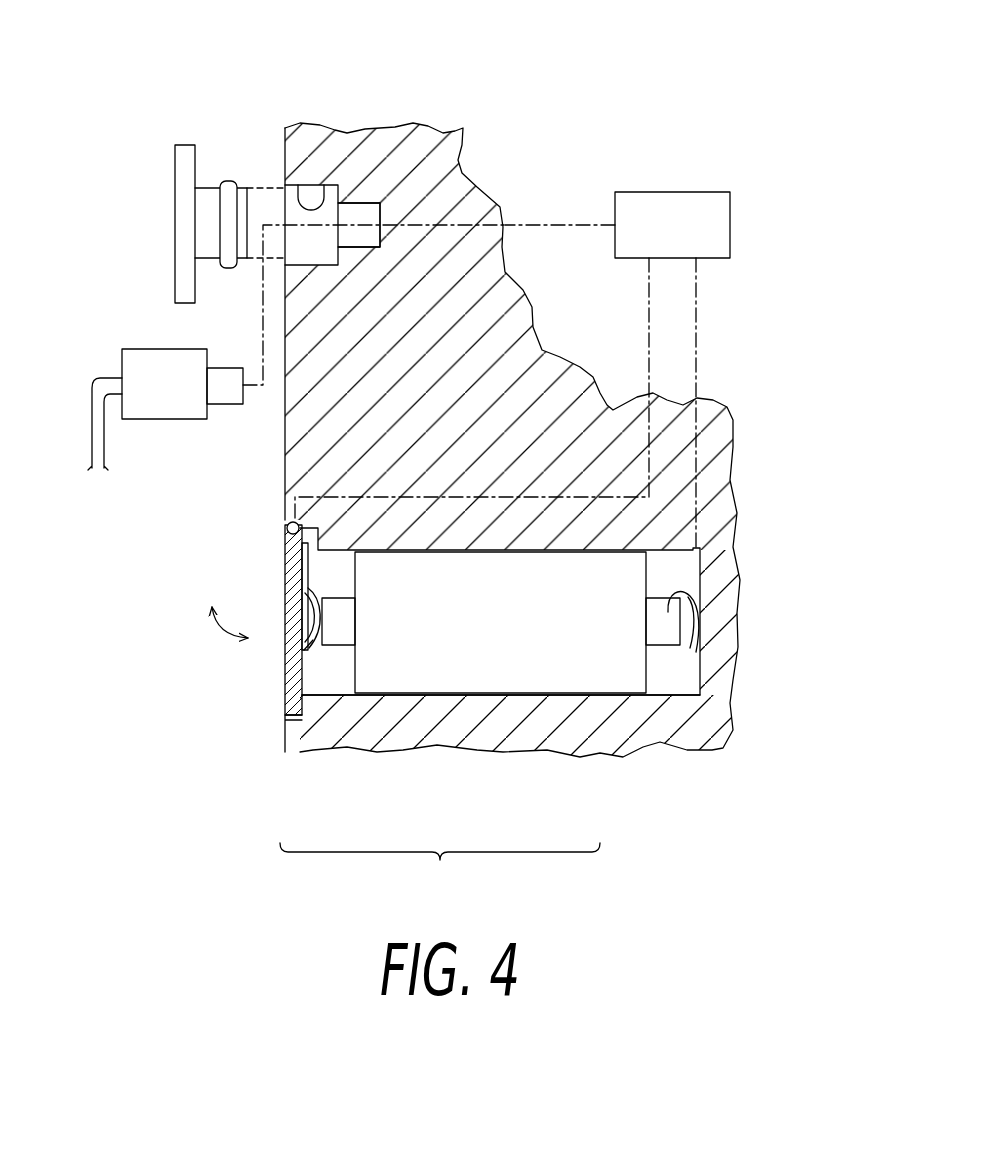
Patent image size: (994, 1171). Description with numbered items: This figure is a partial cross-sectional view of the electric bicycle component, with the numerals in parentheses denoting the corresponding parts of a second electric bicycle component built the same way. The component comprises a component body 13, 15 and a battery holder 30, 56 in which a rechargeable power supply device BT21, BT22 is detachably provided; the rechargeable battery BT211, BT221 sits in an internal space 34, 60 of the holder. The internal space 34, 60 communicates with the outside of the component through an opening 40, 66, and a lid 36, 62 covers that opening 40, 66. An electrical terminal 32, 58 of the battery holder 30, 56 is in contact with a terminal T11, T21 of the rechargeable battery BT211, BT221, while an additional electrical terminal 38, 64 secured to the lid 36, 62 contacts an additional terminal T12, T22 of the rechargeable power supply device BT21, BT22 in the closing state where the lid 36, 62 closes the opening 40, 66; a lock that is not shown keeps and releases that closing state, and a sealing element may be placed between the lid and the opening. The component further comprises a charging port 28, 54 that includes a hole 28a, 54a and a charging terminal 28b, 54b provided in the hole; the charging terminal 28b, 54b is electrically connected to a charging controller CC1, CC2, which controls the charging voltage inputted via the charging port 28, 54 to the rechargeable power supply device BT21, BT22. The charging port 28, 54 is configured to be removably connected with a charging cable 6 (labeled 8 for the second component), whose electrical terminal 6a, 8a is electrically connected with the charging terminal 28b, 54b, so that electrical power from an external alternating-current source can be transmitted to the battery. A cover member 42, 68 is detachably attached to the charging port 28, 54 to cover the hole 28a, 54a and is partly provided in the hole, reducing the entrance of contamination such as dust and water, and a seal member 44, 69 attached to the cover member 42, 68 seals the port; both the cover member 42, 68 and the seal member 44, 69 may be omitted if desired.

The charging cable 6 is at (279, 347).
The charging plug (second embodiment) 8 is at (105, 346).
The electrical terminal 6a is at (215, 434).
The electrical terminal 8a is at (228, 396).
The component body 13 is at (194, 326).
The component body 15 is at (284, 486).
The charging port 28 is at (355, 133).
The charging port 54 is at (425, 45).
The hole 28a is at (315, 126).
The hole 54a is at (318, 196).
The charging terminal 28b is at (379, 144).
The charging terminal 54b is at (362, 223).
The battery holder 30 is at (440, 870).
The battery holder 56 is at (440, 870).
The electrical terminal 32 is at (497, 420).
The electrical terminal 58 is at (584, 752).
The internal space 34 is at (501, 760).
The internal space 60 is at (489, 694).
The lid 36 is at (304, 769).
The lid 62 is at (318, 697).
The additional electrical terminal 38 is at (362, 740).
The additional electrical terminal 64 is at (310, 652).
The opening 40 is at (247, 618).
The opening 66 is at (299, 677).
The cover member 42 is at (166, 172).
The cover member 68 is at (183, 155).
The seal member 44 is at (240, 155).
The seal member 69 is at (230, 182).
The charging controller CC1 is at (520, 330).
The charging controller CC2 is at (680, 192).
The rechargeable power supply device BT21 is at (553, 553).
The rechargeable power supply device BT22 is at (660, 536).
The rechargeable battery BT211 is at (501, 622).
The rechargeable battery BT221 is at (501, 622).
The terminal T11 is at (738, 619).
The terminal T21 is at (672, 600).
The additional terminal T12 is at (253, 586).
The additional terminal T22 is at (302, 561).